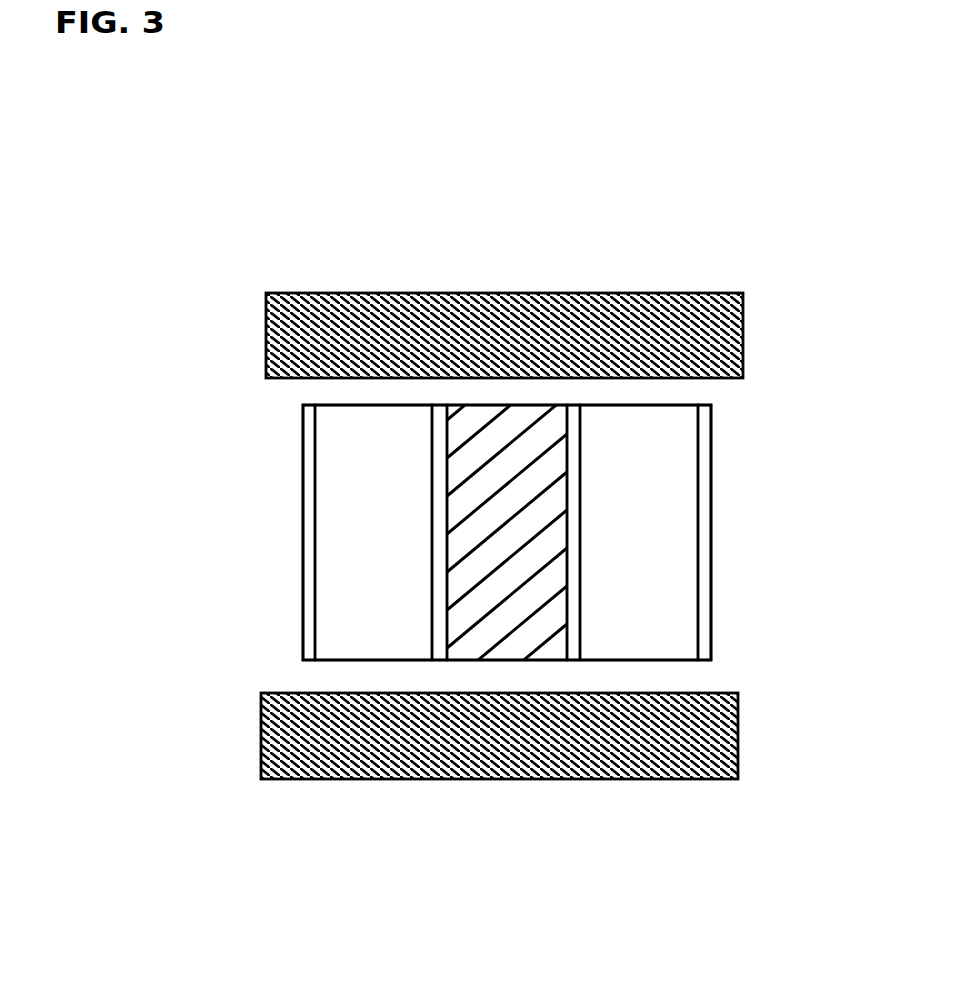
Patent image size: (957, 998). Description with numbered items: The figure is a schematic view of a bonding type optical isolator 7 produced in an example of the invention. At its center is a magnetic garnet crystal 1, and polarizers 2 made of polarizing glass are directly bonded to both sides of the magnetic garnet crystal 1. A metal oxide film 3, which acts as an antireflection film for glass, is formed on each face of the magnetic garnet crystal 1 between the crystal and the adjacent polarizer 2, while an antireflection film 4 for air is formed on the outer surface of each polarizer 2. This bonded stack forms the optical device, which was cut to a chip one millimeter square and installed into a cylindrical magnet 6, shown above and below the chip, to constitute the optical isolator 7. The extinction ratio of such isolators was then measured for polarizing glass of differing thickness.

The magnetic garnet crystal 1 is at (500, 420).
The polarizer 2 is at (660, 453).
The metal oxide film 3 is at (564, 655).
The antireflection film 4 is at (299, 628).
The cylindrical magnet 6 is at (717, 325).
The optical isolator 7 is at (245, 255).